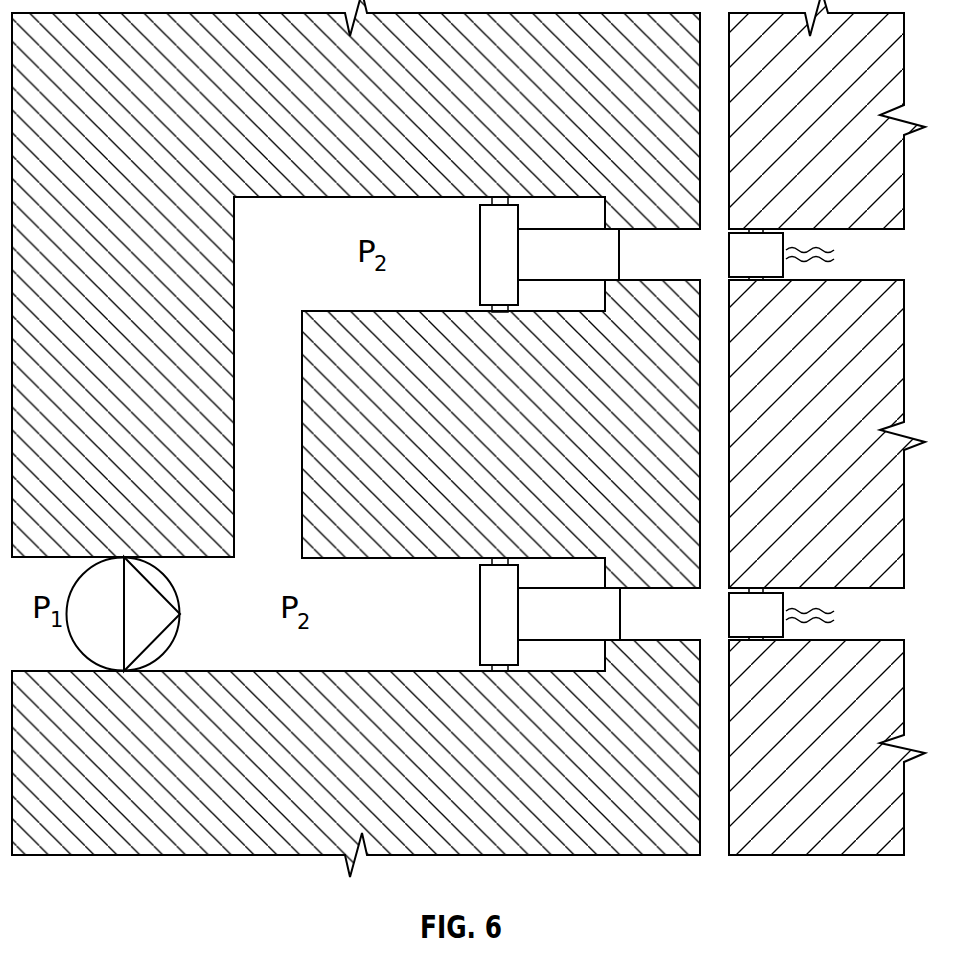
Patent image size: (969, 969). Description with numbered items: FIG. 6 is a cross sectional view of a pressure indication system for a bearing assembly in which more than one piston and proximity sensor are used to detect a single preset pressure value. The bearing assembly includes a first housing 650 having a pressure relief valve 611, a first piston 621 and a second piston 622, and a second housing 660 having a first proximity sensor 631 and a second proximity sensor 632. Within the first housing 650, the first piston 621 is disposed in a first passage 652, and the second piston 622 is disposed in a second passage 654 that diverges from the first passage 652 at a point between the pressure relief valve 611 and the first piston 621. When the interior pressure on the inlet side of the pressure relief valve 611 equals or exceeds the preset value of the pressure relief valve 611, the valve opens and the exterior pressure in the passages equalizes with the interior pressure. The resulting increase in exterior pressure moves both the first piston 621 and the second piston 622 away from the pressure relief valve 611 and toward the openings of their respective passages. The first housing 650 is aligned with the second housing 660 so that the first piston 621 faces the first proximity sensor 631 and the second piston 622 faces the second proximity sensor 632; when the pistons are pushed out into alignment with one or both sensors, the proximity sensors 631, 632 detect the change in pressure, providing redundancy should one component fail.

The first housing 650 is at (167, 146).
The second housing 660 is at (838, 134).
The pressure relief valve 611 is at (115, 628).
The first piston 621 is at (573, 629).
The second piston 622 is at (573, 268).
The first proximity sensor 631 is at (778, 628).
The second proximity sensor 632 is at (778, 268).
The first passage 652 is at (428, 559).
The second passage 654 is at (289, 198).